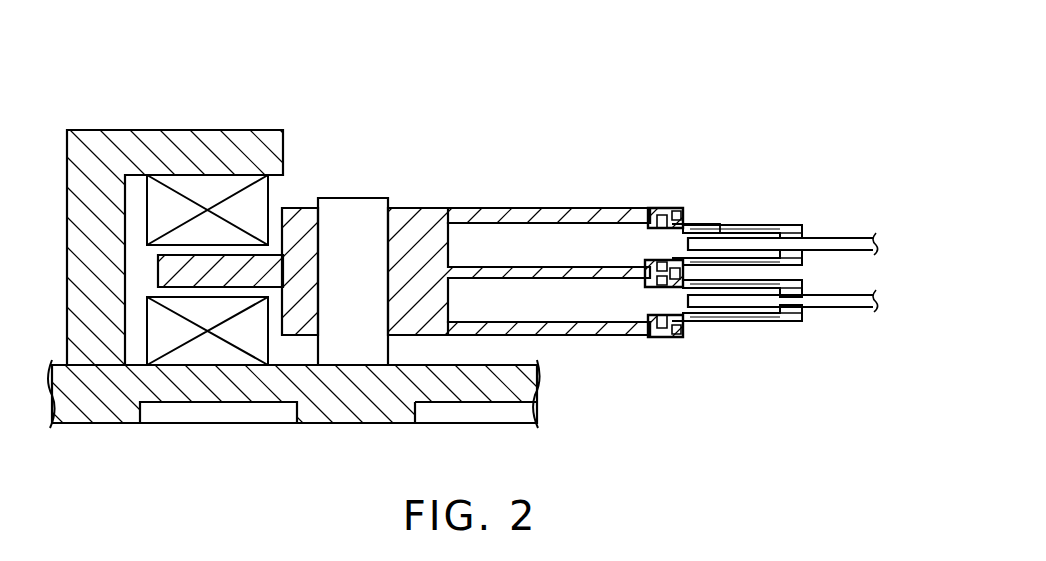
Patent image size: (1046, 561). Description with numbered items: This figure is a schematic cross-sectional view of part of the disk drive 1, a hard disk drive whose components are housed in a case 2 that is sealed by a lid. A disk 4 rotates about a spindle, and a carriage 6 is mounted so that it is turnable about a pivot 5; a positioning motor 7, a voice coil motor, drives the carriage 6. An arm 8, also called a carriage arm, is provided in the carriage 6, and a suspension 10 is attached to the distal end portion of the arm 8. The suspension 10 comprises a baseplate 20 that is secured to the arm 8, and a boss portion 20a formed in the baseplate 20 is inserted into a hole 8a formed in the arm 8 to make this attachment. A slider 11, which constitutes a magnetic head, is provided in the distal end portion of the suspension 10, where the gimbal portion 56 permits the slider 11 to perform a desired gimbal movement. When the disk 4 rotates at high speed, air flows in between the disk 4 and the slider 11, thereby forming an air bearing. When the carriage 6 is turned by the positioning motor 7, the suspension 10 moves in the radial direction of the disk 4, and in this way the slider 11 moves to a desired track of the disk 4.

The disk drive 1 is at (228, 86).
The case 2 is at (108, 423).
The disk 4 is at (860, 238).
The pivot 5 is at (354, 208).
The carriage 6 is at (503, 208).
The positioning motor 7 is at (207, 353).
The arm 8 is at (590, 208).
The hole 8a is at (662, 208).
The suspension 10 is at (768, 258).
The slider 11 is at (805, 236).
The baseplate 20 is at (685, 224).
The boss portion 20a is at (657, 208).
The gimbal portion 56 is at (785, 229).